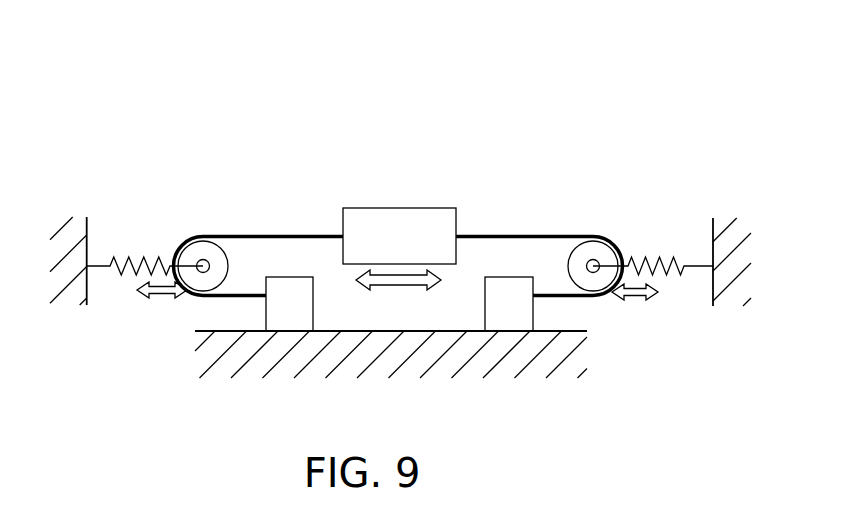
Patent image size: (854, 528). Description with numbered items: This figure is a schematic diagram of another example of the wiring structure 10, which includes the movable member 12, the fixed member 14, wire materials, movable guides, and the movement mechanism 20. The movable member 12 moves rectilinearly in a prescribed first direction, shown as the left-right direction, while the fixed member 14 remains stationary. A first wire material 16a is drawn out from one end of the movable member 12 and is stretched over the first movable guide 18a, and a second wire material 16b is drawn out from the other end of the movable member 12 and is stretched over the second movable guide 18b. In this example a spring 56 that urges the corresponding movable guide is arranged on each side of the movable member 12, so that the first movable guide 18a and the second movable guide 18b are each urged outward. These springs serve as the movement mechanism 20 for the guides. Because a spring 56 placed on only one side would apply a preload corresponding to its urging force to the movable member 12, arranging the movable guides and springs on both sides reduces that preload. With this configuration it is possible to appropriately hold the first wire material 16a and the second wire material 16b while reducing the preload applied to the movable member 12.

The wiring structure 10 is at (350, 142).
The movable member 12 is at (402, 217).
The fixed member 14 is at (287, 315).
The first wire material 16a is at (262, 230).
The second wire material 16b is at (502, 233).
The first movable guide 18a is at (200, 253).
The second movable guide 18b is at (590, 253).
The spring 56 is at (147, 262).
The movement mechanism 20 is at (408, 209).